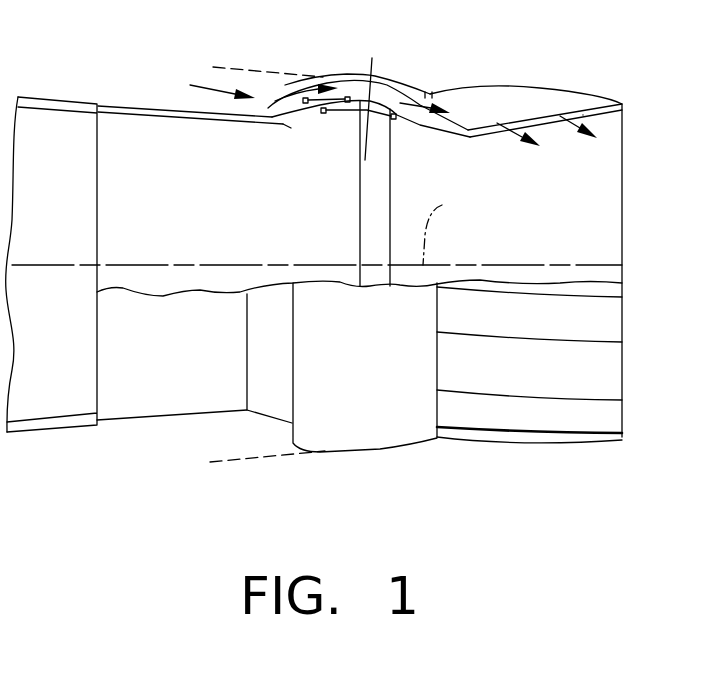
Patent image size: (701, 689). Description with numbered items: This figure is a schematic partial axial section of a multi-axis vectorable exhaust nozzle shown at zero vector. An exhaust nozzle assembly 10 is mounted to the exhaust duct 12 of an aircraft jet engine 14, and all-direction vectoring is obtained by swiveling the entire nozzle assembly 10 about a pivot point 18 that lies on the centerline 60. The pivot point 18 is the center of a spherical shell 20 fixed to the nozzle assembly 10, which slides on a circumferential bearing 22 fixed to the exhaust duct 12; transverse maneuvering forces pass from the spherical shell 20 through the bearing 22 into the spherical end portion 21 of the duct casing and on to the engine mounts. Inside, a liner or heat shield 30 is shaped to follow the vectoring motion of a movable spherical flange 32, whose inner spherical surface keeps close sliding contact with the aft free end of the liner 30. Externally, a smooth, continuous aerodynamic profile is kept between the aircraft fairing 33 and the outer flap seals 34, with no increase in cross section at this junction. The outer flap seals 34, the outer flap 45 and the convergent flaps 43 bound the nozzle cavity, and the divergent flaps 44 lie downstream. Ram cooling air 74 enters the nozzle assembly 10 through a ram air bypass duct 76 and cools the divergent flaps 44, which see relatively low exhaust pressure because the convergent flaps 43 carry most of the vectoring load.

The exhaust nozzle assembly 10 is at (519, 63).
The exhaust duct 12 is at (182, 106).
The aircraft jet engine 14 is at (72, 214).
The pivot point 18 is at (340, 272).
The spherical shell 20 is at (372, 58).
The spherical end portion 21 is at (283, 123).
The circumferential bearing 22 is at (347, 97).
The liner 30 is at (292, 128).
The movable spherical flange 32 is at (366, 160).
The aircraft fairing 33 is at (235, 67).
The outer flap seals 34 is at (383, 450).
The convergent flaps 43 is at (455, 134).
The divergent flaps 44 is at (583, 115).
The outer flap 45 is at (497, 447).
The centerline 60 is at (450, 229).
The ram cooling air 74 is at (400, 97).
The ram air bypass duct 76 is at (213, 78).